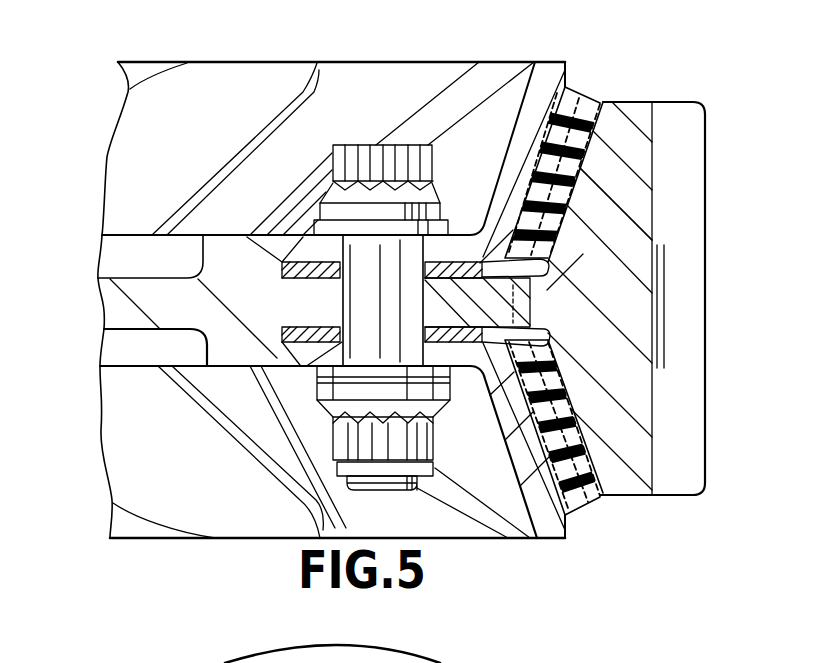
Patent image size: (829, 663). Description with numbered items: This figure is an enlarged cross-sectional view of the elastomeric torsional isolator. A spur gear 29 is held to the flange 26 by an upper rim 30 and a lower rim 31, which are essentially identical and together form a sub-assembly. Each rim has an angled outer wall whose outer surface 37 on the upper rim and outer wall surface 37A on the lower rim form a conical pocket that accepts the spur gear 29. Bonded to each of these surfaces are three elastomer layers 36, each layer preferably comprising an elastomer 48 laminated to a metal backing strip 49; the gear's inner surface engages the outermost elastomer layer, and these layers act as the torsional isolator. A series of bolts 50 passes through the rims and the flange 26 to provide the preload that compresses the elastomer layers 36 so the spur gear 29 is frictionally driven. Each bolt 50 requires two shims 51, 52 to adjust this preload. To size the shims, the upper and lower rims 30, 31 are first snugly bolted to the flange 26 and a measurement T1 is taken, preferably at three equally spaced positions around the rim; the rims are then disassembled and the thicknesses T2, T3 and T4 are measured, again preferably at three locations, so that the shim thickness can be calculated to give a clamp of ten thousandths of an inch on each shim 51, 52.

The flange 26 is at (288, 314).
The spur gear 29 is at (625, 310).
The upper rim 30 is at (505, 47).
The lower rim 31 is at (504, 546).
The elastomer layers 36 is at (587, 94).
The outer surface of the wall 37 is at (568, 86).
The outer wall surface 37A is at (572, 514).
The elastomer 48 is at (547, 253).
The metal backing strip 49 is at (583, 175).
The bolts 50 is at (405, 490).
The shim 51 is at (524, 288).
The shim 52 is at (528, 338).
The measurement T1 is at (307, 233).
The thickness T2 is at (484, 250).
The thickness T3 is at (330, 275).
The thickness T4 is at (457, 262).